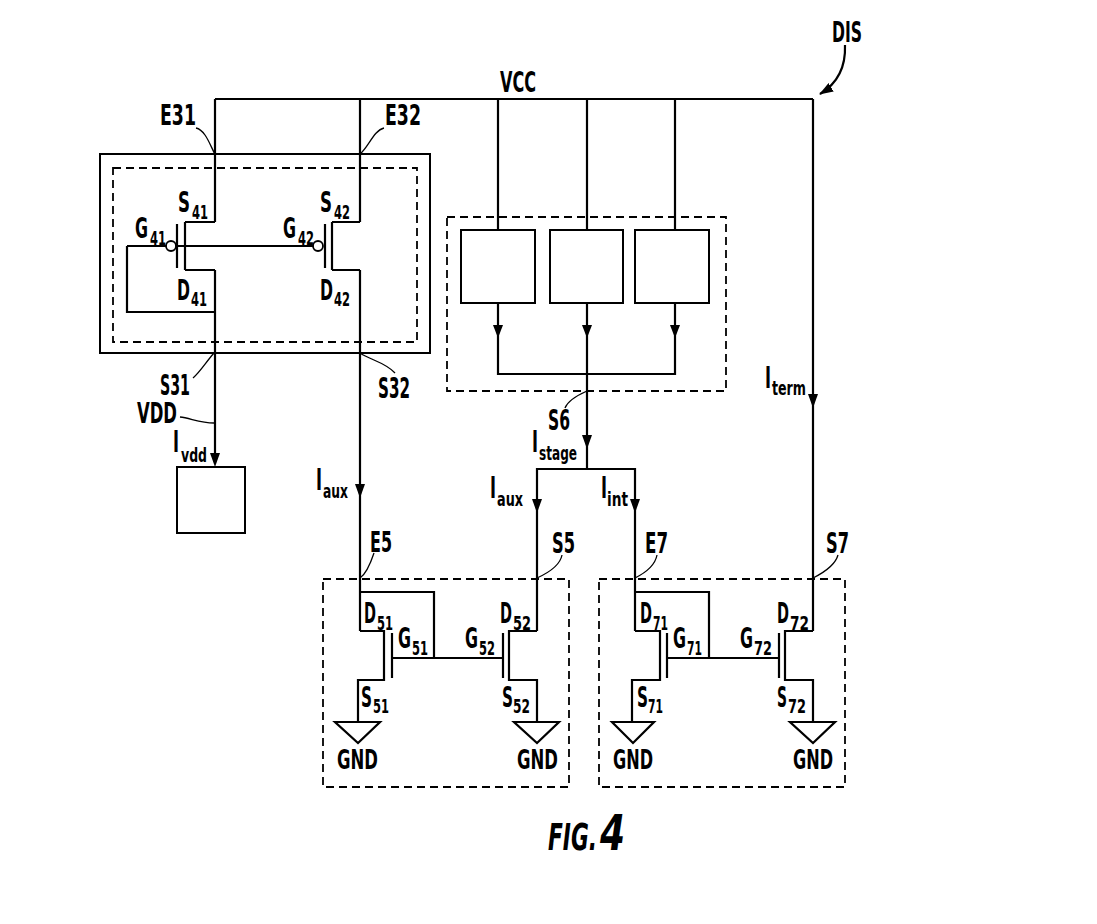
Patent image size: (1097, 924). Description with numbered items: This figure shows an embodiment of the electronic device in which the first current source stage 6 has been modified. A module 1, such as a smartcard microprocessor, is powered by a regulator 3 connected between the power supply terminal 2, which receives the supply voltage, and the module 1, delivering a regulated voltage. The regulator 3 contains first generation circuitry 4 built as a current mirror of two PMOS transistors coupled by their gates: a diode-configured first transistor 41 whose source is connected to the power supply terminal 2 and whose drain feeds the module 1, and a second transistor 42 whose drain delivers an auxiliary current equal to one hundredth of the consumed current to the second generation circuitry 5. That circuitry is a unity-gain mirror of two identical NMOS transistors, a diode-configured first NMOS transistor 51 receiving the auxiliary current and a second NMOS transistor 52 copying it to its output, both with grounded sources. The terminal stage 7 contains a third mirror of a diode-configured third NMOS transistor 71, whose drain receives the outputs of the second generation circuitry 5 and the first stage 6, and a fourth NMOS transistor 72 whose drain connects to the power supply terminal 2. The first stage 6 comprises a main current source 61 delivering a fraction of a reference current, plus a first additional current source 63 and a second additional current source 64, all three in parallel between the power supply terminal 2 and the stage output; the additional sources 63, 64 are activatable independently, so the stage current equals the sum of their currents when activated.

The module 1 is at (177, 505).
The power supply terminal 2 is at (215, 99).
The regulator 3 is at (125, 154).
The first generation circuitry 4 is at (277, 168).
The second generation circuitry 5 is at (451, 576).
The first current source stage 6 is at (726, 262).
The terminal stage 7 is at (724, 576).
The first transistor 41 is at (221, 255).
The second transistor 42 is at (363, 255).
The first NMOS transistor 51 is at (355, 658).
The second NMOS transistor 52 is at (541, 658).
The main current source 61 is at (508, 283).
The first additional current source 63 is at (597, 283).
The second additional current source 64 is at (682, 283).
The third NMOS transistor 71 is at (630, 658).
The fourth NMOS transistor 72 is at (816, 658).